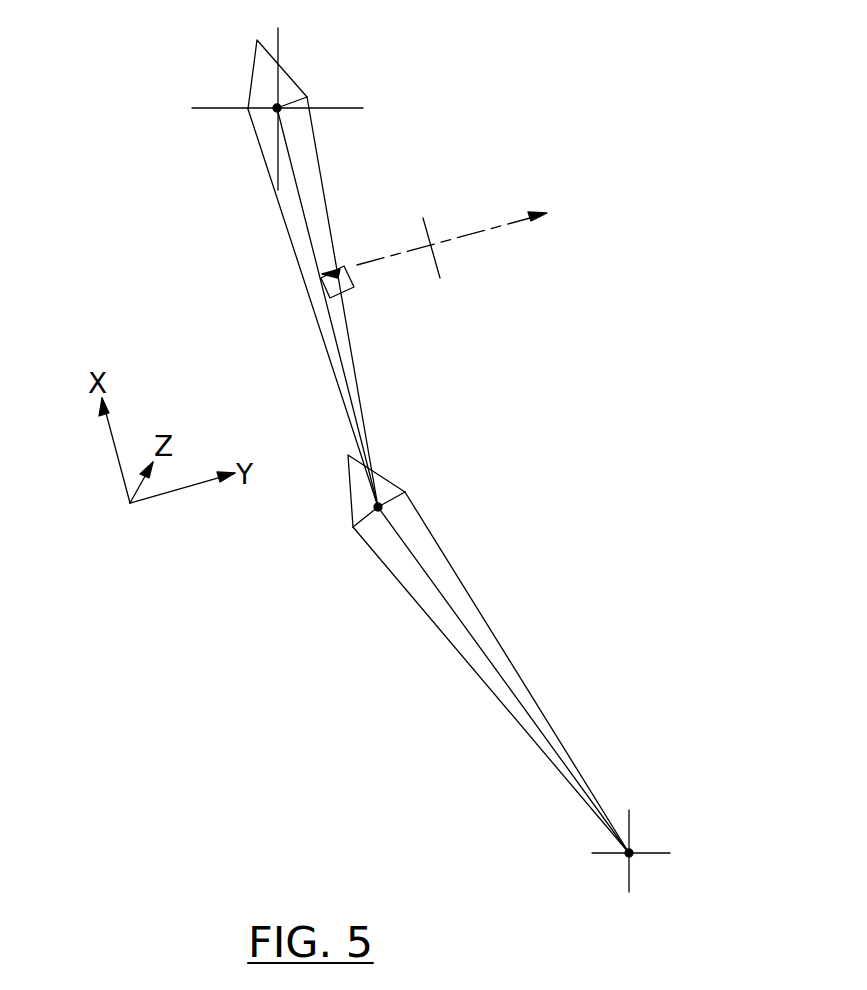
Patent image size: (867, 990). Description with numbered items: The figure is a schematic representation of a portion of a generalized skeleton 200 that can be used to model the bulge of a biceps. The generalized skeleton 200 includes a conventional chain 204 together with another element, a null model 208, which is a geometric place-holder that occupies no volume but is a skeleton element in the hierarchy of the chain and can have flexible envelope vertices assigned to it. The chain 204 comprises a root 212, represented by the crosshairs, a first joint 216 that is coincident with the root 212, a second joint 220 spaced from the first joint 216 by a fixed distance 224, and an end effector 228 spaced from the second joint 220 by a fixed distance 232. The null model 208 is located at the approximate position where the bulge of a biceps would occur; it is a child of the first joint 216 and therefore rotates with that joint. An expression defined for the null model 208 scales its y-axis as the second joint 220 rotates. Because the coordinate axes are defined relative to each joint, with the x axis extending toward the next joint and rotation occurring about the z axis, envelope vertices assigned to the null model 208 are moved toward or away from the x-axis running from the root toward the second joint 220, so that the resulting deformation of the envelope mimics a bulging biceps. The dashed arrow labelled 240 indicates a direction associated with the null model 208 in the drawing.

The generalized skeleton 200 is at (195, 250).
The chain 204 is at (302, 295).
The null model 208 is at (428, 230).
The root 212 is at (280, 40).
The first joint 216 is at (287, 104).
The second joint 220 is at (382, 512).
The fixed distance 224 is at (303, 200).
The end effector 228 is at (630, 832).
The fixed distance 232 is at (463, 622).
The direction line 240 is at (490, 228).